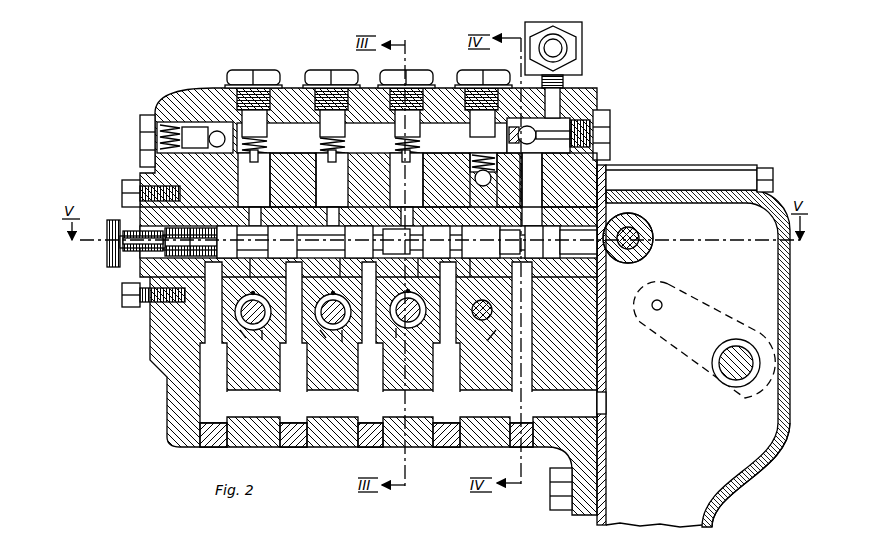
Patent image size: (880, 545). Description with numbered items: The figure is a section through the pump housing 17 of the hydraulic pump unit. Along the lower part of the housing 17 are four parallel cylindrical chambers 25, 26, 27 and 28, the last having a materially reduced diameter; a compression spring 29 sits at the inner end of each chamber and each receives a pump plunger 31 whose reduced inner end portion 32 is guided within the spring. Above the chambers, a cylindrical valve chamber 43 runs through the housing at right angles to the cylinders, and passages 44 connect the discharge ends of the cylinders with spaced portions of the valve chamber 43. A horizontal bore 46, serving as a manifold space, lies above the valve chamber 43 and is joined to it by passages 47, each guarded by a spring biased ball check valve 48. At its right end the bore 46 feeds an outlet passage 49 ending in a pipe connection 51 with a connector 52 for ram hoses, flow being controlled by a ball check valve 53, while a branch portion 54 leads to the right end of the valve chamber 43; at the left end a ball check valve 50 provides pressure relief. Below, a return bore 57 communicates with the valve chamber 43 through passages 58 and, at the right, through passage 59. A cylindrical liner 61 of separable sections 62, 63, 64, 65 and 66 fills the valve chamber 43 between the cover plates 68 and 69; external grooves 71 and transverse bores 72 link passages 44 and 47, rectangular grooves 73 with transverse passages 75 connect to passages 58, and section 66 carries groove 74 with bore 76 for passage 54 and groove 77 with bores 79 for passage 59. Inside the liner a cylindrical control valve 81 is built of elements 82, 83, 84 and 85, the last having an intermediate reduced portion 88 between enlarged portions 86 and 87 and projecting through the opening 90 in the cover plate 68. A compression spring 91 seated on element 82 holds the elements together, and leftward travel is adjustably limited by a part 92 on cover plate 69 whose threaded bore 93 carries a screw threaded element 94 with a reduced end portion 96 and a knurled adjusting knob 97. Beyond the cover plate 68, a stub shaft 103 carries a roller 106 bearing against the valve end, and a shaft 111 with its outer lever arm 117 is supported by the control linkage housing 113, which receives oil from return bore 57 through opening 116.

The pump housing 17 is at (152, 345).
The cylindrical chamber 25 is at (242, 342).
The cylindrical chamber 26 is at (321, 342).
The cylindrical chamber 27 is at (395, 340).
The cylindrical chamber 28 is at (477, 321).
The compression spring 29 is at (345, 345).
The pump plunger 31 is at (494, 342).
The reduced inner end portion 32 is at (265, 344).
The cylindrical valve chamber 43 is at (630, 296).
The passage 44 is at (263, 293).
The horizontal bore 46 is at (377, 149).
The passage 47 is at (277, 168).
The spring biased ball check valve 48 is at (320, 187).
The outlet passage 49 is at (578, 100).
The spring biased ball check valve 50 is at (195, 128).
The pipe connection 51 is at (580, 70).
The connector 52 is at (568, 45).
The spring biased ball check valve 53 is at (533, 122).
The branch portion 54 is at (556, 180).
The bore 57 is at (343, 409).
The passage 58 is at (211, 385).
The passage 59 is at (528, 384).
The cylindrical liner 61 is at (575, 297).
The liner section 62 is at (175, 210).
The liner section 63 is at (272, 186).
The liner section 64 is at (317, 189).
The liner section 65 is at (414, 137).
The liner section 66 is at (509, 148).
The cover plate 68 is at (603, 357).
The cover plate 69 is at (142, 316).
The circumferential external groove 71 is at (246, 210).
The transverse bore 72 is at (366, 267).
The circumferential external groove 73 is at (314, 222).
The groove 74 is at (569, 180).
The transverse passage 75 is at (389, 267).
The transverse bore 76 is at (552, 242).
The groove 77 is at (509, 180).
The transverse bore 79 is at (529, 180).
The cylindrical control valve 81 is at (338, 327).
The valve element 82 is at (290, 249).
The valve element 83 is at (366, 249).
The valve element 84 is at (444, 249).
The valve element 85 is at (517, 247).
The enlarged cylindrical portion 86 is at (558, 238).
The enlarged cylindrical portion 87 is at (368, 233).
The intermediate reduced portion 88 is at (502, 247).
The coaxial opening 90 is at (601, 265).
The compression spring 91 is at (143, 224).
The inwardly projecting part 92 is at (191, 253).
The internally threaded bore 93 is at (160, 256).
The screw threaded element 94 is at (133, 254).
The reduced end portion 96 is at (230, 240).
The knurled adjusting knob 97 is at (106, 262).
The stub shaft 103 is at (634, 233).
The roller 106 is at (641, 239).
The shaft 111 is at (730, 354).
The control linkage housing 113 is at (759, 471).
The opening 116 is at (608, 406).
The lever arm 117 is at (699, 307).